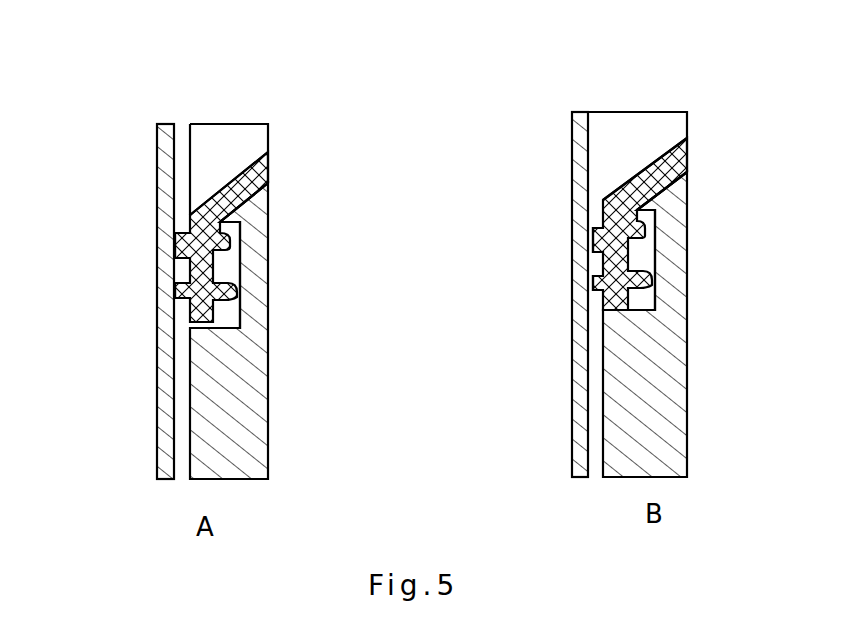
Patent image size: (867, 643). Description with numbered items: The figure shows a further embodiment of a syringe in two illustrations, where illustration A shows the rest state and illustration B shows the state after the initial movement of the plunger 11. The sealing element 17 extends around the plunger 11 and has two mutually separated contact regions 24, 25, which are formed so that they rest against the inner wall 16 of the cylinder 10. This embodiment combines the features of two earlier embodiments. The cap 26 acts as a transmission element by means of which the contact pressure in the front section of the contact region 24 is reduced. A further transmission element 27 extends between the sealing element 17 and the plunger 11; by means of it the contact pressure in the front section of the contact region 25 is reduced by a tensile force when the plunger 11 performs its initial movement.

The cylinder 10 is at (165, 190).
The plunger 11 is at (238, 447).
The inner wall 16 is at (174, 168).
The sealing element 17 is at (188, 225).
The contact region 24 is at (175, 245).
The contact region 25 is at (178, 288).
The cap 26 is at (225, 180).
The further transmission element 27 is at (240, 280).